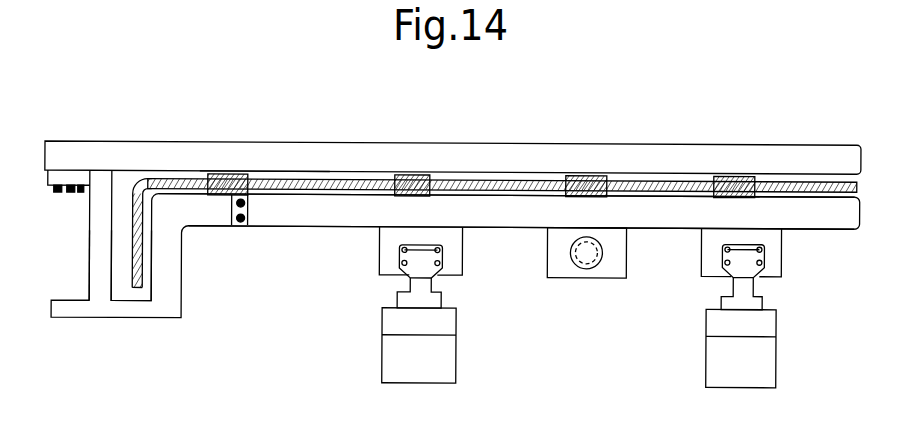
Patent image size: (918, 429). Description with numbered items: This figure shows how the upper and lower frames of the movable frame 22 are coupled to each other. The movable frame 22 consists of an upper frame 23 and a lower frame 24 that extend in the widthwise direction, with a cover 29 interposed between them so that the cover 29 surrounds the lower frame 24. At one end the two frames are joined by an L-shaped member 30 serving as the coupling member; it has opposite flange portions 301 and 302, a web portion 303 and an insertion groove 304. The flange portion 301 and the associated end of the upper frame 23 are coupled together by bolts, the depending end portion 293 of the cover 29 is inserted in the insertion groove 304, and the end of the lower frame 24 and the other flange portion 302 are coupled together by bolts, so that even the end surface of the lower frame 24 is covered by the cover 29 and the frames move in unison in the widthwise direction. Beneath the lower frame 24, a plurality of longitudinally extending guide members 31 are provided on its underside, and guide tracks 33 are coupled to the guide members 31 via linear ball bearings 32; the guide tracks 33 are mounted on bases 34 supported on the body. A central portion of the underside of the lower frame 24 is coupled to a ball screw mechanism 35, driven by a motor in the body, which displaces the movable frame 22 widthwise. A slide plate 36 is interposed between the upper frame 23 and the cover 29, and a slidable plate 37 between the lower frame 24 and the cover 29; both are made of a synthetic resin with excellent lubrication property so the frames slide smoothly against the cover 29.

The movable frame 22 is at (450, 136).
The upper frame 23 is at (265, 144).
The lower frame 24 is at (310, 207).
The cover 29 is at (643, 180).
The L-shaped member 30 is at (92, 229).
The flange portion 301 is at (67, 178).
The other flange portion 302 is at (223, 212).
The web portion 303 is at (100, 280).
The insertion groove 304 is at (122, 283).
The depending end portion 293 is at (138, 267).
The guide member 31 is at (390, 257).
The linear ball bearing 32 is at (437, 248).
The guide track 33 is at (425, 283).
The base 34 is at (442, 365).
The ball screw mechanism 35 is at (587, 259).
The slide plate 36 is at (732, 194).
The slidable plate 37 is at (733, 197).